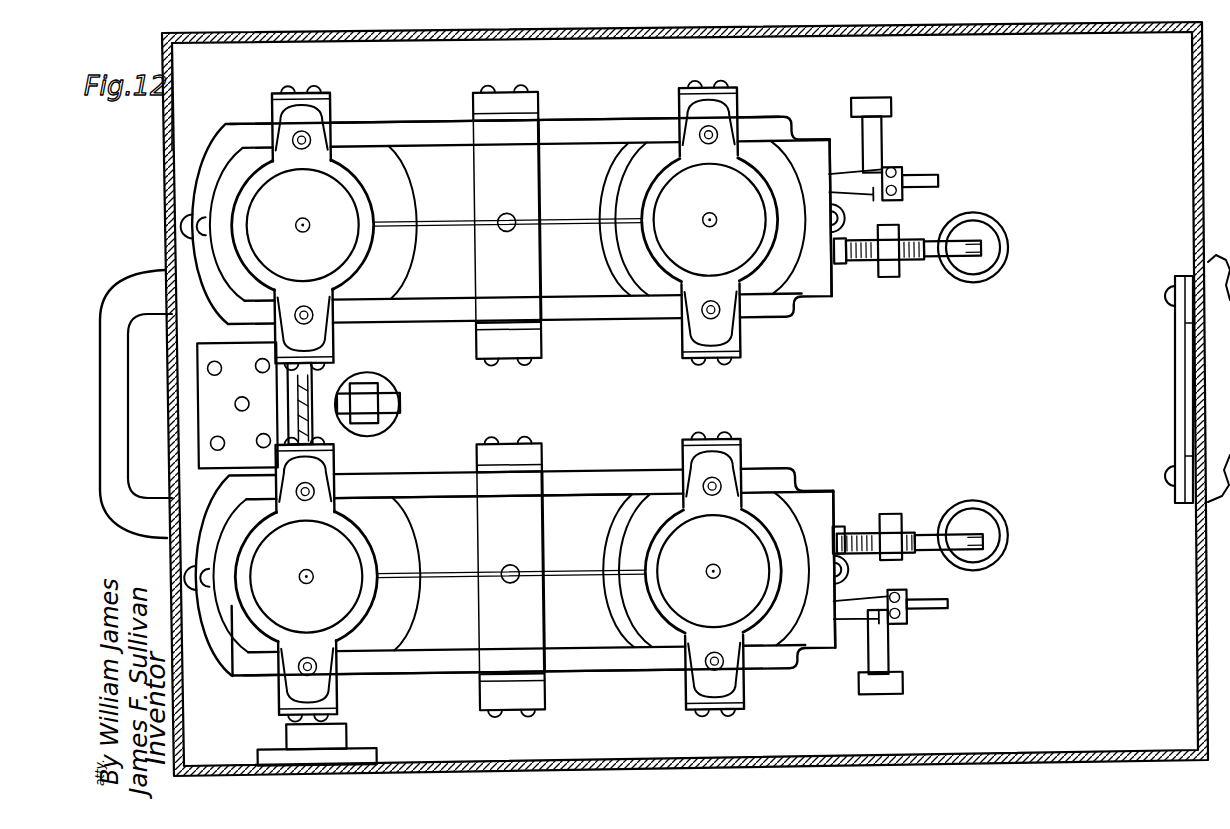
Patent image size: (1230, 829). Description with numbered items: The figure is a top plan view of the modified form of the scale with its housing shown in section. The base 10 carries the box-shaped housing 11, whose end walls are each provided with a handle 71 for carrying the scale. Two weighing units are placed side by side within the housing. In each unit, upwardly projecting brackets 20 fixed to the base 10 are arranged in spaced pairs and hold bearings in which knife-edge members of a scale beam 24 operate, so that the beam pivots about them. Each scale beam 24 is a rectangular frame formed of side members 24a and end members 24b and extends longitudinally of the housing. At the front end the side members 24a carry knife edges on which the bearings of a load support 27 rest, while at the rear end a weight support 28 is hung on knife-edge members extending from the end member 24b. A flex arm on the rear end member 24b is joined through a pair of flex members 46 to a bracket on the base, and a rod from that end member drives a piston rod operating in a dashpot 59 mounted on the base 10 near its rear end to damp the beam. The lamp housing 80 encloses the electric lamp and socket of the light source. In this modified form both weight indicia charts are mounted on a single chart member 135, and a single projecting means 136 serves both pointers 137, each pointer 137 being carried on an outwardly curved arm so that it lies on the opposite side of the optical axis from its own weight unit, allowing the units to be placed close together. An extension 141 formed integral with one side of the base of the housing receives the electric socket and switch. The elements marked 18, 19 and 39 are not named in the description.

The base 10 is at (178, 153).
The housing 11 is at (165, 204).
The handle 71 is at (160, 278).
The upper reel frame 18 is at (399, 115).
The lower reel frame 19 is at (583, 467).
The brackets 20 is at (531, 103).
The scale beam 24 is at (582, 118).
The side members 24a is at (616, 699).
The end members 24b is at (824, 292).
The load support 27 is at (279, 399).
The weight support 28 is at (745, 394).
The shaft 39 is at (573, 219).
The flex members 46 is at (943, 185).
The dashpot 59 is at (982, 290).
The lamp housing 80 is at (237, 405).
The chart member 135 is at (1175, 326).
The projecting means 136 is at (405, 389).
The pointer 137 is at (310, 371).
The extension 141 is at (373, 753).